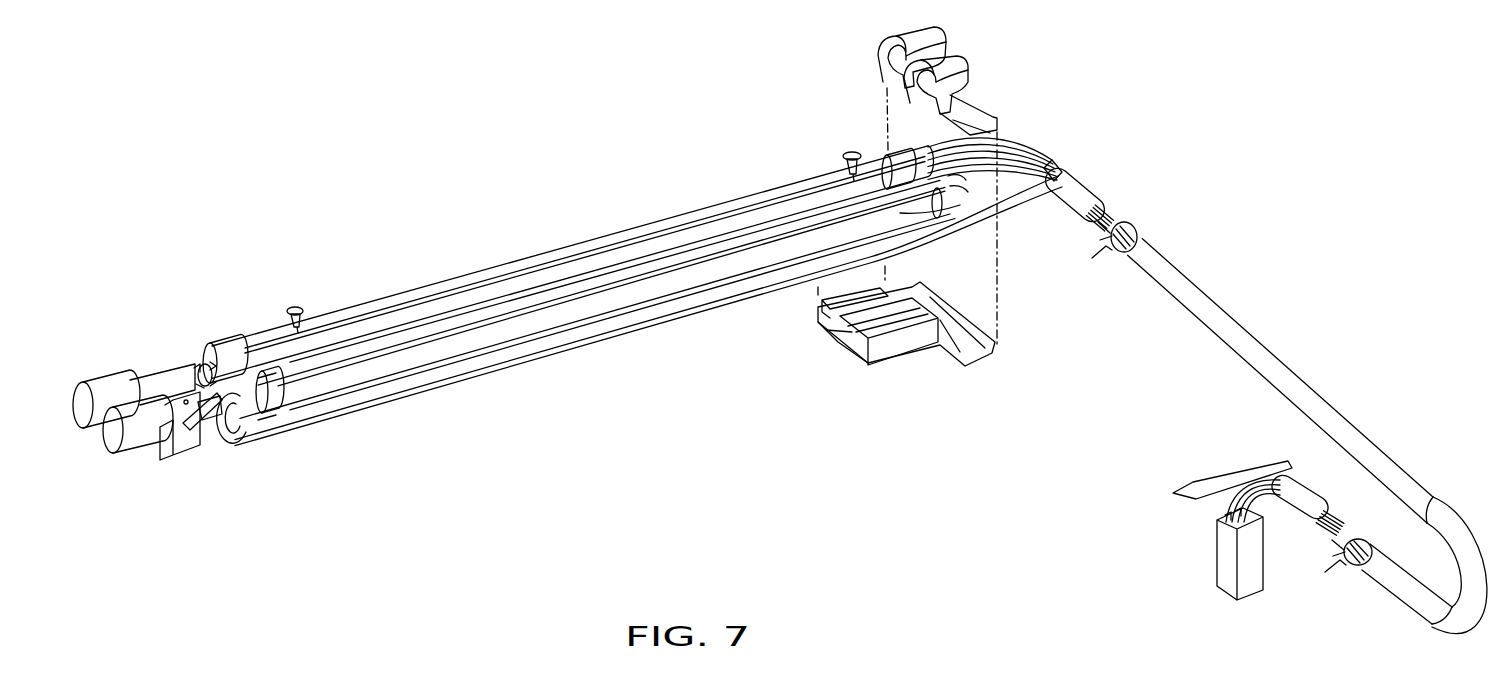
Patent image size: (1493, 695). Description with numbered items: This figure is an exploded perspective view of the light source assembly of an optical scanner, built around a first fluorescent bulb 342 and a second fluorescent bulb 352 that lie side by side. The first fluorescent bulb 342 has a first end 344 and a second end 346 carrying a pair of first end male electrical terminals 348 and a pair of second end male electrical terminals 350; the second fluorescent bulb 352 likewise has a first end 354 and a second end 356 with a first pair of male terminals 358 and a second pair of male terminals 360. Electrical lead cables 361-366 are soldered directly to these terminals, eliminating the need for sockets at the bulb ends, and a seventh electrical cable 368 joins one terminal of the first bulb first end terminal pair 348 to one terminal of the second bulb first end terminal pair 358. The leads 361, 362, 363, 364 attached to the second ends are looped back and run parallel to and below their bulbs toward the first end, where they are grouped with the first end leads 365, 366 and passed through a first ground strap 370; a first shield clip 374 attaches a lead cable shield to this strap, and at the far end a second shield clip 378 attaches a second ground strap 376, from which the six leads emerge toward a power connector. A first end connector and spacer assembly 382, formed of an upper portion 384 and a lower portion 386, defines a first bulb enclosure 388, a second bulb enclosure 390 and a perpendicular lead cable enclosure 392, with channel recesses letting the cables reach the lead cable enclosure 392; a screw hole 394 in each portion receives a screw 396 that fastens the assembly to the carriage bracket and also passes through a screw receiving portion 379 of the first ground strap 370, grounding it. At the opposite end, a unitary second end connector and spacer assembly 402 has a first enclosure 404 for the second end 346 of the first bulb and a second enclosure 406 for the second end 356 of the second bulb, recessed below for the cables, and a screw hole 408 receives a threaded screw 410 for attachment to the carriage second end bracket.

The first fluorescent bulb 342 is at (525, 263).
The first end 344 is at (887, 157).
The second end 346 is at (240, 343).
The pair of first end male electrical terminals 348 is at (934, 186).
The pair of second end male electrical terminals 350 is at (214, 362).
The second fluorescent bulb 352 is at (672, 283).
The first end 354 is at (898, 213).
The second end 356 is at (305, 388).
The first pair of male terminals 358 is at (1050, 157).
The second pair of male terminals 360 is at (253, 432).
The electrical lead cable 361 is at (435, 391).
The electrical lead cable 362 is at (505, 362).
The electrical lead cable 363 is at (210, 427).
The electrical lead cable 364 is at (200, 370).
The first end lead 365 is at (1007, 203).
The first end lead 366 is at (993, 240).
The seventh electrical cable 368 is at (945, 215).
The first ground strap 370 is at (1095, 188).
The first shield clip 374 is at (1143, 231).
The second ground strap 376 is at (1300, 525).
The second shield clip 378 is at (1323, 573).
The screw receiving portion 379 is at (1007, 158).
The first end connector and spacer assembly 382 is at (937, 40).
The upper portion 384 is at (973, 72).
The lower portion 386 is at (880, 352).
The first bulb enclosure 388 is at (817, 313).
The second bulb enclosure 390 is at (850, 353).
The lead cable enclosure 392 is at (983, 357).
The screw hole 394 is at (827, 340).
The screw 396 is at (847, 154).
The second end connector and spacer assembly 402 is at (127, 460).
The first enclosure 404 is at (143, 380).
The second enclosure 406 is at (175, 432).
The screw hole 408 is at (190, 407).
The threaded screw 410 is at (300, 307).
The electrical lead cables 361-366 is at (1217, 510).